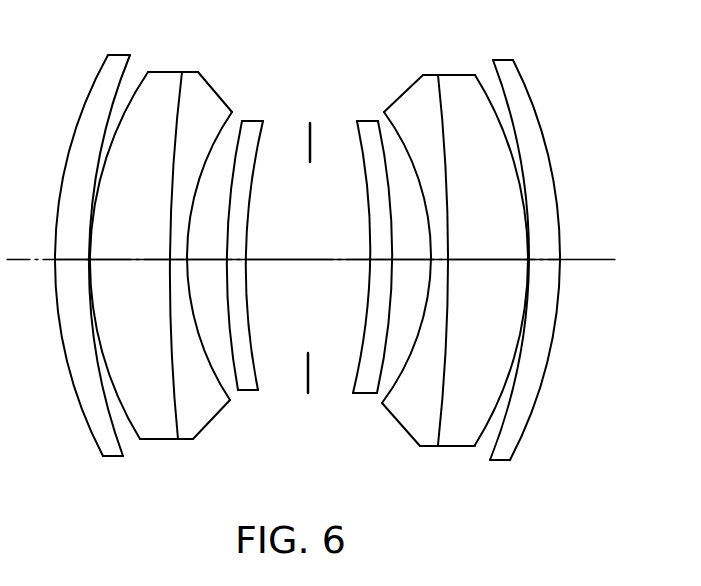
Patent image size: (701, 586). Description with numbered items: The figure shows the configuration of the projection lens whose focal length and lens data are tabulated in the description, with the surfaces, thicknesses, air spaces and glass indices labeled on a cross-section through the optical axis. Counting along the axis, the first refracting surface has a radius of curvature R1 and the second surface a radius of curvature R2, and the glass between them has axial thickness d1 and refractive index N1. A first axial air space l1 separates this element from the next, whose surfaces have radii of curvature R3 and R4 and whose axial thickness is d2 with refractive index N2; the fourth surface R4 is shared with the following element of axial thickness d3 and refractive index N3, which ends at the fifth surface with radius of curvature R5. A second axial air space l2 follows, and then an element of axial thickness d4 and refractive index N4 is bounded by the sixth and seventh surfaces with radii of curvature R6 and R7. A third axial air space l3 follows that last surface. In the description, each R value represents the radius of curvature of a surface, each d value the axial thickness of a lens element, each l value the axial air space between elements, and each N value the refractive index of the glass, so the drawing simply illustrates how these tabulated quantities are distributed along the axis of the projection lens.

The refractive index of the first lens element N1 is at (307, 258).
The refractive index of the second lens element N2 is at (309, 268).
The refractive index of the third lens element N3 is at (309, 257).
The refractive index of the fourth lens element N4 is at (309, 264).
The radius of curvature of the first surface R1 is at (94, 443).
The radius of curvature of the second surface R2 is at (122, 447).
The radius of curvature of the third surface R3 is at (137, 438).
The radius of curvature of the fourth surface R4 is at (181, 428).
The radius of curvature of the fifth surface R5 is at (232, 402).
The radius of curvature of the sixth surface R6 is at (236, 385).
The radius of curvature of the seventh surface R7 is at (260, 384).
The axial thickness of the first lens element d1 is at (307, 250).
The axial thickness of the second lens element d2 is at (309, 250).
The axial thickness of the third lens element d3 is at (174, 263).
The axial thickness of the fourth lens element d4 is at (245, 261).
The first axial air space l1 is at (88, 261).
The second axial air space l2 is at (411, 248).
The third axial air space l3 is at (308, 248).